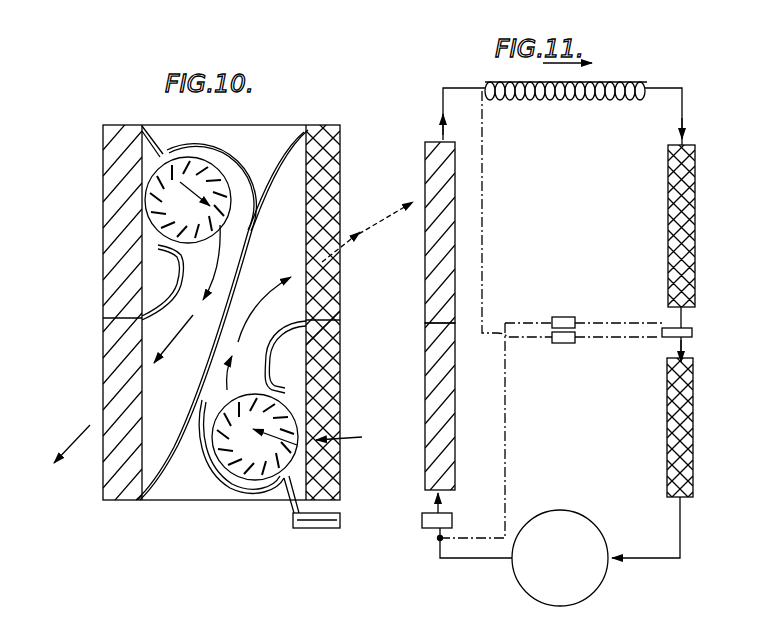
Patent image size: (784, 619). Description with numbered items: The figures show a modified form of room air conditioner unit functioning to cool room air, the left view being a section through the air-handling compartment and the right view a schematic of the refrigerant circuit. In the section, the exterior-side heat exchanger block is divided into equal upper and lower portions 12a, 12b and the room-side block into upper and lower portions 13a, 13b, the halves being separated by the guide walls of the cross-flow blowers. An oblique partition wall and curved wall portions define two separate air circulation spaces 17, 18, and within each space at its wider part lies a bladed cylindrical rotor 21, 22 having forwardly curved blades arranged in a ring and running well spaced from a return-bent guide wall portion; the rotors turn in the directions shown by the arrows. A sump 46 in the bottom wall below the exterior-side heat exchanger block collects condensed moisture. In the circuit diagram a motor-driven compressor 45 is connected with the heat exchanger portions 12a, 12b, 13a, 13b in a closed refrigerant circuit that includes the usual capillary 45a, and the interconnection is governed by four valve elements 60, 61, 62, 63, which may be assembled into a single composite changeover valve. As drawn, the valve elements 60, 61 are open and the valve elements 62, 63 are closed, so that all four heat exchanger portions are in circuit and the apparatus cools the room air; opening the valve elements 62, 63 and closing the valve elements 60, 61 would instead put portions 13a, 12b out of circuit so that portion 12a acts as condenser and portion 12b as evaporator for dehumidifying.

In FIG. 10, the upper portion of heat exchanger block 12a is at (359, 218).
In FIG. 11, the upper portion of heat exchanger block 12a is at (690, 259).
In FIG. 10, the lower portion of heat exchanger block 12b is at (325, 409).
In FIG. 11, the lower portion of heat exchanger block 12b is at (676, 446).
In FIG. 10, the upper portion of heat exchanger block 13a is at (121, 247).
In FIG. 11, the upper portion of heat exchanger block 13a is at (440, 283).
In FIG. 10, the lower portion of heat exchanger block 13b is at (118, 341).
In FIG. 11, the lower portion of heat exchanger block 13b is at (436, 442).
In FIG. 10, the air circulation space 17 is at (278, 273).
In FIG. 10, the second air circulation space 18 is at (188, 385).
In FIG. 10, the bladed cylindrical rotor 21 is at (338, 369).
In FIG. 10, the bladed cylindrical rotor 22 is at (150, 178).
In FIG. 11, the motor-driven compressor 45 is at (578, 573).
In FIG. 11, the capillary 45a is at (574, 100).
In FIG. 10, the sump 46 is at (318, 529).
In FIG. 11, the valve element 60 is at (431, 529).
In FIG. 11, the valve element 61 is at (692, 332).
In FIG. 11, the valve element 62 is at (562, 317).
In FIG. 11, the valve element 63 is at (560, 344).